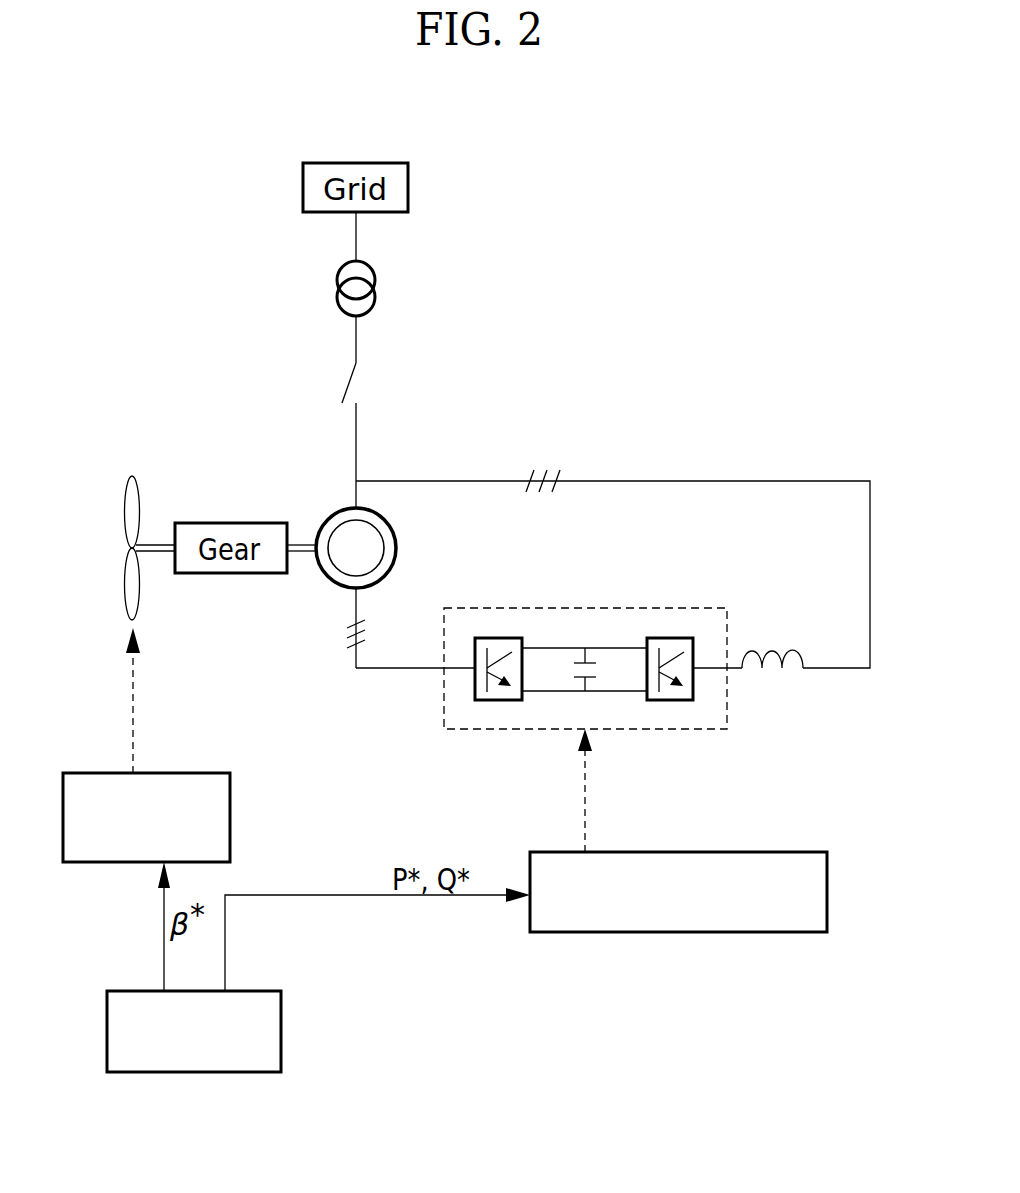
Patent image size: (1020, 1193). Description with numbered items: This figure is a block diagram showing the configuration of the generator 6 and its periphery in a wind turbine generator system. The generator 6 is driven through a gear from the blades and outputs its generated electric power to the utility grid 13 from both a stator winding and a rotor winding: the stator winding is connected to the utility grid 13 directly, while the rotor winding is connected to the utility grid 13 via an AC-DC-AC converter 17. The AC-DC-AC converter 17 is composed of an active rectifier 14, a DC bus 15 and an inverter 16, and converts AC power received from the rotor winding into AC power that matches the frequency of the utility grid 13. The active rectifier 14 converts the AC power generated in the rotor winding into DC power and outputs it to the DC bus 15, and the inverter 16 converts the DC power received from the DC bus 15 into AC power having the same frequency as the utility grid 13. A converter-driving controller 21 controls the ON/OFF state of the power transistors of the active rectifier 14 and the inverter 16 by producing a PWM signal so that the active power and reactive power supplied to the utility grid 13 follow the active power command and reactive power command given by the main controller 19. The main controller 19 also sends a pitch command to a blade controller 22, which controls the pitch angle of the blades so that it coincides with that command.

The generator 6 is at (397, 546).
The utility grid 13 is at (356, 233).
The active rectifier 14 is at (498, 700).
The DC bus 15 is at (627, 691).
The inverter 16 is at (693, 692).
The AC-DC-AC converter 17 is at (611, 653).
The main controller 19 is at (281, 1033).
The converter-driving controller 21 is at (827, 895).
The blade controller 22 is at (180, 773).